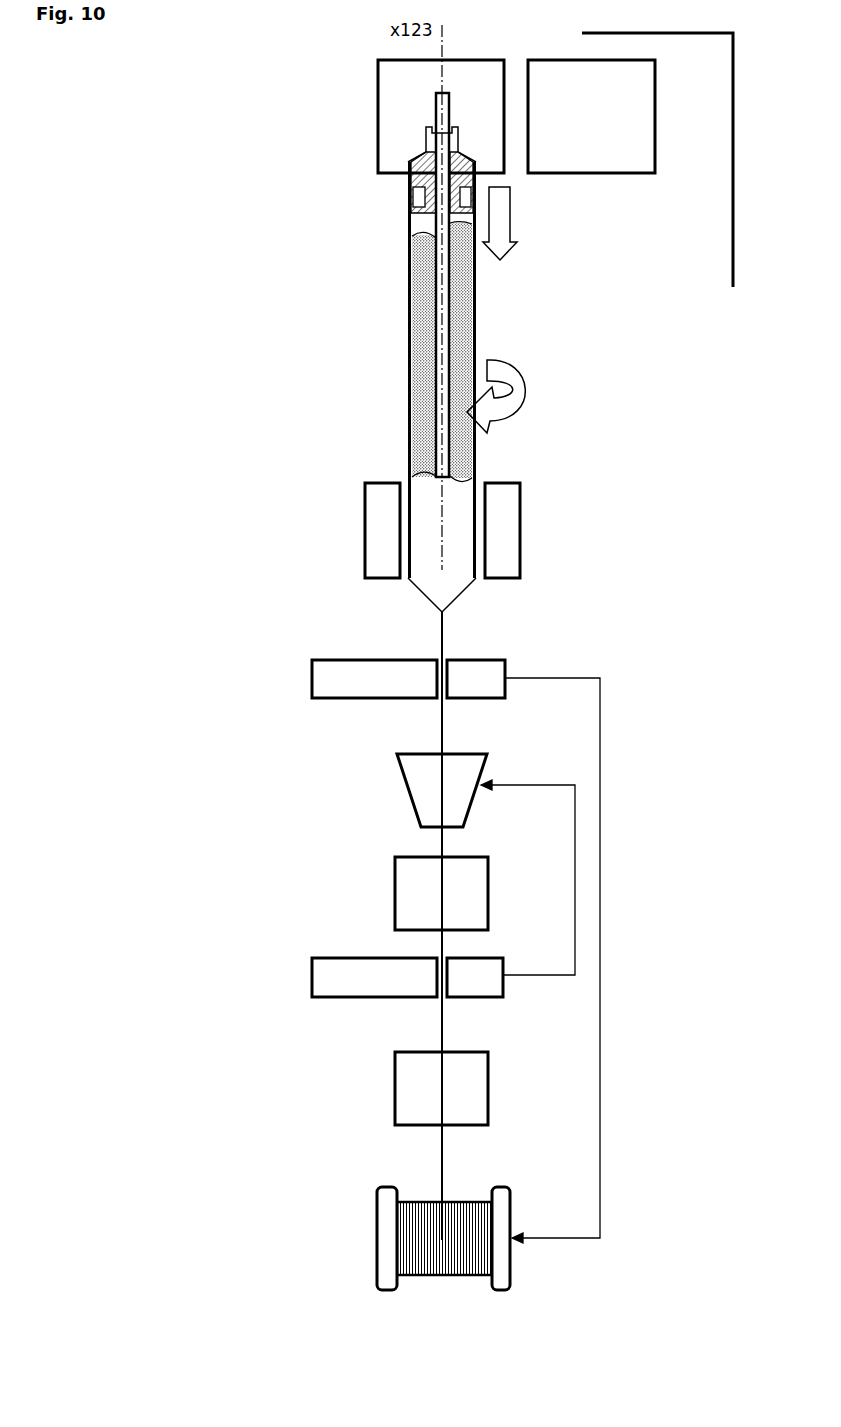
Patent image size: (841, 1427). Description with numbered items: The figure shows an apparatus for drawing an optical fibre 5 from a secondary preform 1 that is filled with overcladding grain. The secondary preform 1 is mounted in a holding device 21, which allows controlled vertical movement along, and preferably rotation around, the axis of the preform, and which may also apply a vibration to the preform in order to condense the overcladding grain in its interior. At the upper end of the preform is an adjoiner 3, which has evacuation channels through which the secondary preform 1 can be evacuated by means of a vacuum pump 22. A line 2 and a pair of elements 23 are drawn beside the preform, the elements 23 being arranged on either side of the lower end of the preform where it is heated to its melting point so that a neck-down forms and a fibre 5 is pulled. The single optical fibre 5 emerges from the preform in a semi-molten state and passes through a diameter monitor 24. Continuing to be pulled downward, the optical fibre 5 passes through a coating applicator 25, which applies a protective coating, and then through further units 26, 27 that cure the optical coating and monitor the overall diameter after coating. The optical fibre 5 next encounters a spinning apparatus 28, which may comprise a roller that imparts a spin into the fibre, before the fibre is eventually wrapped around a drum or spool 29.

The secondary preform 1 is at (405, 348).
The furnace boundary 2 is at (657, 160).
The adjoiner 3 is at (415, 158).
The optical fibre 5 is at (442, 642).
The holding device 21 is at (441, 116).
The vacuum pump 22 is at (591, 116).
The heating elements 23 is at (379, 535).
The diameter monitor 24 is at (378, 668).
The coating applicator 25 is at (378, 790).
The curing unit 26 is at (378, 883).
The diameter monitoring unit 27 is at (378, 966).
The spinning apparatus 28 is at (378, 1098).
The drum or spool 29 is at (378, 1217).